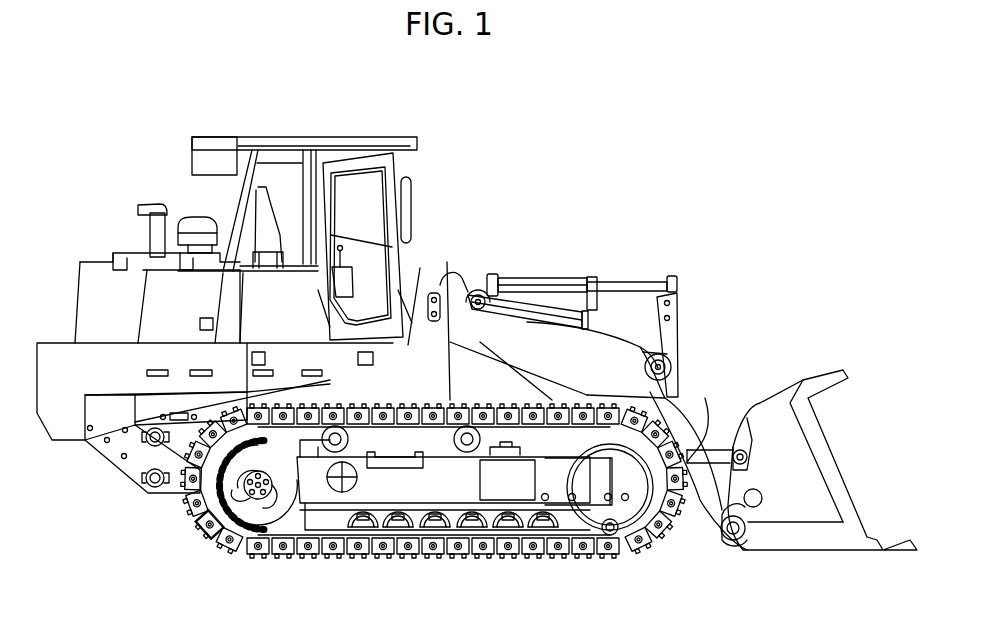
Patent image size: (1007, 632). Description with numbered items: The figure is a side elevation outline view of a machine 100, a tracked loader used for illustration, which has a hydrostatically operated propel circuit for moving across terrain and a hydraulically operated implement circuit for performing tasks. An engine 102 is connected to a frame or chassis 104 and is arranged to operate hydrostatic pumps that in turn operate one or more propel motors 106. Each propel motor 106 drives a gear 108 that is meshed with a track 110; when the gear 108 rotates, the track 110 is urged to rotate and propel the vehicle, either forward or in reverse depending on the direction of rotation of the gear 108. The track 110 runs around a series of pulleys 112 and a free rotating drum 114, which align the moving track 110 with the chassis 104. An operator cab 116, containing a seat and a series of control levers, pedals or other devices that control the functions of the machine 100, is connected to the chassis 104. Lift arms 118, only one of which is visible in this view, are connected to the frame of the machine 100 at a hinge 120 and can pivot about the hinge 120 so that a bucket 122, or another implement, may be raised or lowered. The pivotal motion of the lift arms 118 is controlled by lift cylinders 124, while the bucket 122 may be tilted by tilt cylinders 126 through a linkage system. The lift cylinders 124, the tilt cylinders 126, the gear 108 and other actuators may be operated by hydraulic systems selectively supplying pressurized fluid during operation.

The machine 100 is at (578, 165).
The engine 102 is at (97, 283).
The frame or chassis 104 is at (147, 455).
The propel motor 106 is at (268, 508).
The gear 108 is at (250, 525).
The track 110 is at (198, 534).
The pulleys 112 is at (543, 522).
The free rotating drum 114 is at (620, 535).
The operator cab 116 is at (325, 140).
The lift arms 118 is at (655, 395).
The hinge 120 is at (434, 295).
The bucket 122 is at (793, 456).
The lift cylinders 124 is at (493, 400).
The tilt cylinders 126 is at (608, 303).